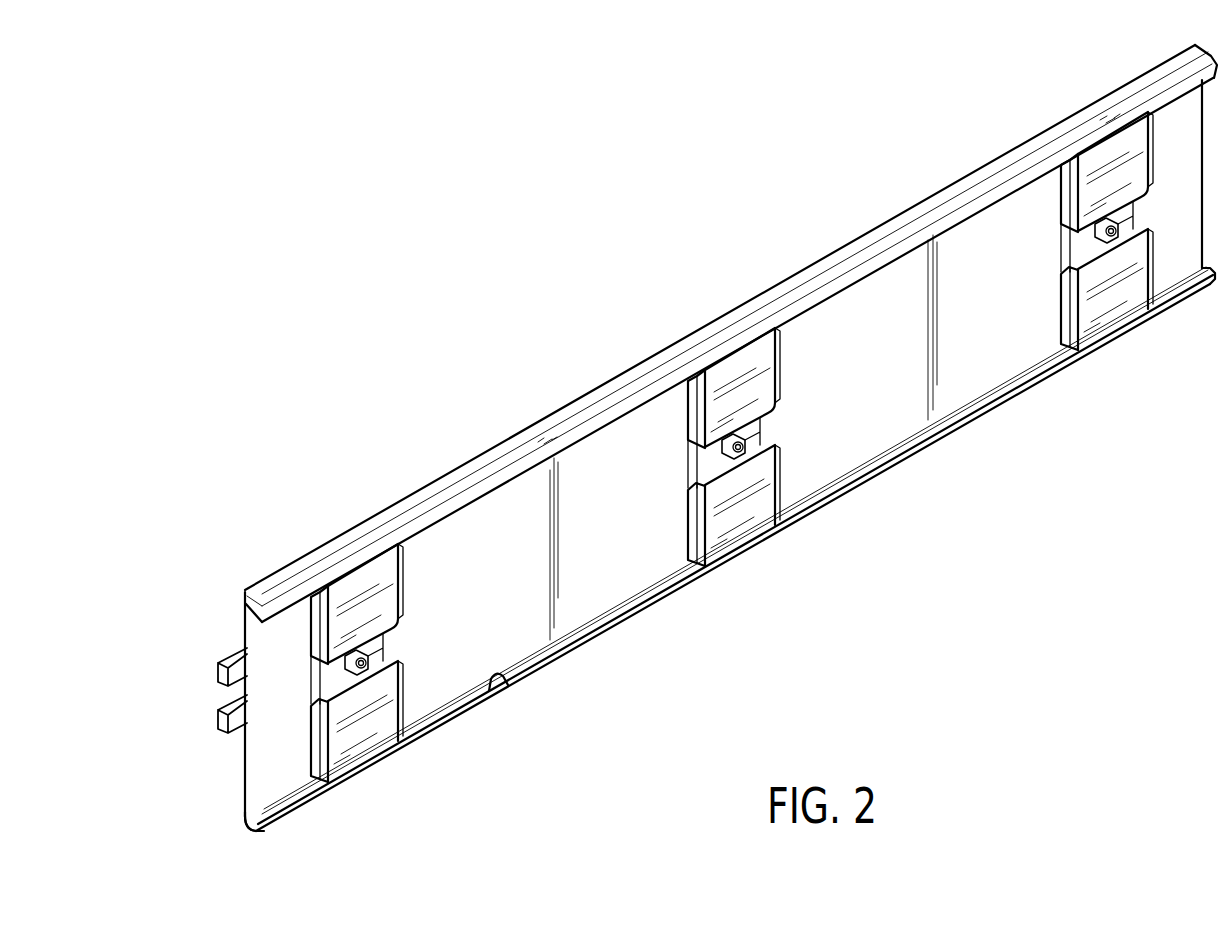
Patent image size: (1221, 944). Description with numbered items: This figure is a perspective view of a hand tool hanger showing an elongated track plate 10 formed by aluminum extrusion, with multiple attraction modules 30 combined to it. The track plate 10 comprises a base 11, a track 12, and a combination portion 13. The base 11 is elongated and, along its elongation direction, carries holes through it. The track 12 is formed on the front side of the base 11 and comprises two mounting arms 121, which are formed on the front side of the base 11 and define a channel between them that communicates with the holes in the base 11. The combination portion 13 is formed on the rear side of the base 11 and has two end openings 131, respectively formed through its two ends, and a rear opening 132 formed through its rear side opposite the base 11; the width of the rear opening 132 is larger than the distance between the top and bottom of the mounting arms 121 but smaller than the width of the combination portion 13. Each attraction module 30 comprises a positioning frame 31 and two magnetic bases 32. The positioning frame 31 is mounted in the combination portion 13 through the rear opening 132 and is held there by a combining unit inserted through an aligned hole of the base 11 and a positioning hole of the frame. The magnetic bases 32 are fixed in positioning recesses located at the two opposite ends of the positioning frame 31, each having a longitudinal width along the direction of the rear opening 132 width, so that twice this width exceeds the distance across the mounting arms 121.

The track plate 10 is at (673, 438).
The base 11 is at (448, 493).
The track 12 is at (188, 693).
The mounting arms 121 is at (227, 670).
The combination portion 13 is at (695, 549).
The end openings 131 is at (263, 824).
The rear opening 132 is at (503, 678).
The attraction modules 30 is at (746, 447).
The positioning frame 31 is at (684, 466).
The magnetic bases 32 is at (762, 392).